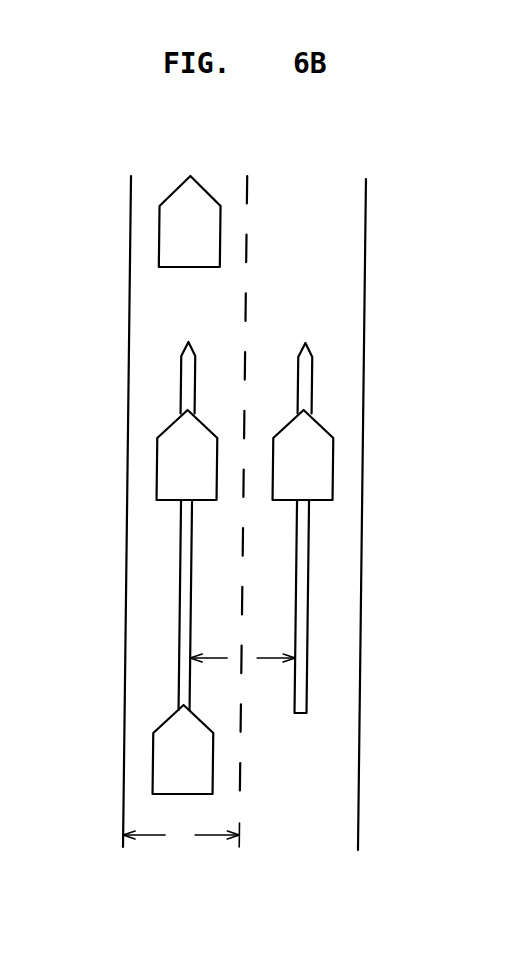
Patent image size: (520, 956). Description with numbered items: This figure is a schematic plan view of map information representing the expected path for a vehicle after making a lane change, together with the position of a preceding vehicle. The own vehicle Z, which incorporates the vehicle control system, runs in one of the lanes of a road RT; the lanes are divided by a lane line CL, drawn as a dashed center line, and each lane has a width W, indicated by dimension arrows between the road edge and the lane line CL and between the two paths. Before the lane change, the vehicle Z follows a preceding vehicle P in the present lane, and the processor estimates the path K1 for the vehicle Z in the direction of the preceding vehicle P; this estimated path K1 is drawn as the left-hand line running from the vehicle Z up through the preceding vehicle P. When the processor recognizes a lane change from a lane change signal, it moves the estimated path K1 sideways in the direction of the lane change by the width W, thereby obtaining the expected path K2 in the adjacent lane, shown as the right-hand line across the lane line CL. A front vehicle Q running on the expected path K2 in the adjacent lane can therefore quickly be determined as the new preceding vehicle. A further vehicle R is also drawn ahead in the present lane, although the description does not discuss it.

The estimated path K1 is at (115, 568).
The expected path K2 is at (373, 528).
The road RT is at (385, 750).
The lane line CL is at (249, 777).
The width W is at (209, 747).
The pattern element R is at (190, 221).
The preceding vehicle P is at (188, 421).
The front vehicle Q is at (304, 421).
The own vehicle Z is at (183, 749).